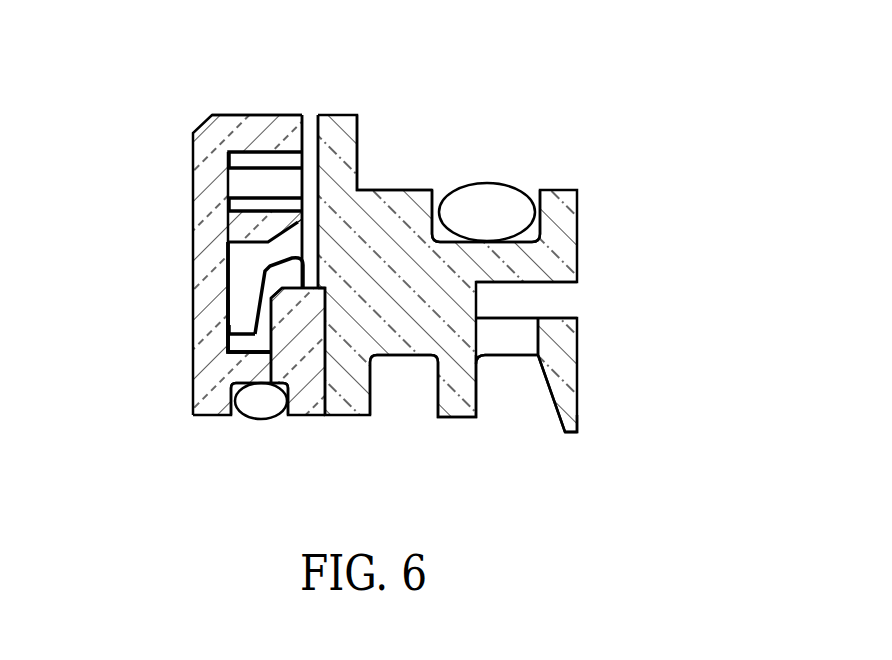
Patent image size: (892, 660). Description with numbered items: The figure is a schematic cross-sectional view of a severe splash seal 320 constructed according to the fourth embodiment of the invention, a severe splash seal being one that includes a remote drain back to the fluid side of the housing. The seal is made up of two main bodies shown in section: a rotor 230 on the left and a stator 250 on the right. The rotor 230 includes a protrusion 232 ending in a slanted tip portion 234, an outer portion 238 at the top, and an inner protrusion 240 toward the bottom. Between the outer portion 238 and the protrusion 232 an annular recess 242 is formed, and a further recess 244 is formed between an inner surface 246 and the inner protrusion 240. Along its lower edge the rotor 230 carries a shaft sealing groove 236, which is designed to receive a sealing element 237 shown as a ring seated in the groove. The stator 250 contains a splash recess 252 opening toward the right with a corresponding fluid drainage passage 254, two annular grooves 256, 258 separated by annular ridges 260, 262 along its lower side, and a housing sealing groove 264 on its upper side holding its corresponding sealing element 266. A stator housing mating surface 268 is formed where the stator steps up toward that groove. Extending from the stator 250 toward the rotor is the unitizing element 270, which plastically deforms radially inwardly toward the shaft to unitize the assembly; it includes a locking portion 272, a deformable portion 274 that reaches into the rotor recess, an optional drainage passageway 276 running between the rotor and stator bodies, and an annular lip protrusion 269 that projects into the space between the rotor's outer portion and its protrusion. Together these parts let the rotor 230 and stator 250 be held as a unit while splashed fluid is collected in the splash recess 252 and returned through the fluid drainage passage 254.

The severe splash seal 320 is at (597, 86).
The rotor 230 is at (212, 138).
The outer portion 238 is at (247, 117).
The drainage passageway 276 is at (308, 122).
The annular recess 242 is at (235, 160).
The annular lip protrusion 269 is at (268, 186).
The protrusion 232 is at (275, 233).
The slanted tip portion 234 is at (262, 236).
The deformable portion 274 is at (265, 263).
The unitizing element 270 is at (258, 318).
The locking portion 272 is at (237, 312).
The inner surface 246 is at (240, 340).
The recess 244 is at (236, 353).
The inner protrusion 240 is at (315, 332).
The shaft sealing groove 236 is at (242, 390).
The sealing element 237 is at (267, 407).
The stator 250 is at (397, 215).
The stator housing mating surface 268 is at (362, 168).
The housing sealing groove 264 is at (522, 237).
The sealing element 266 is at (477, 198).
The splash recess 252 is at (546, 300).
The fluid drainage passage 254 is at (527, 338).
The annular groove 258 is at (515, 370).
The annular groove 256 is at (408, 372).
The annular ridge 260 is at (459, 393).
The annular ridge 262 is at (568, 420).